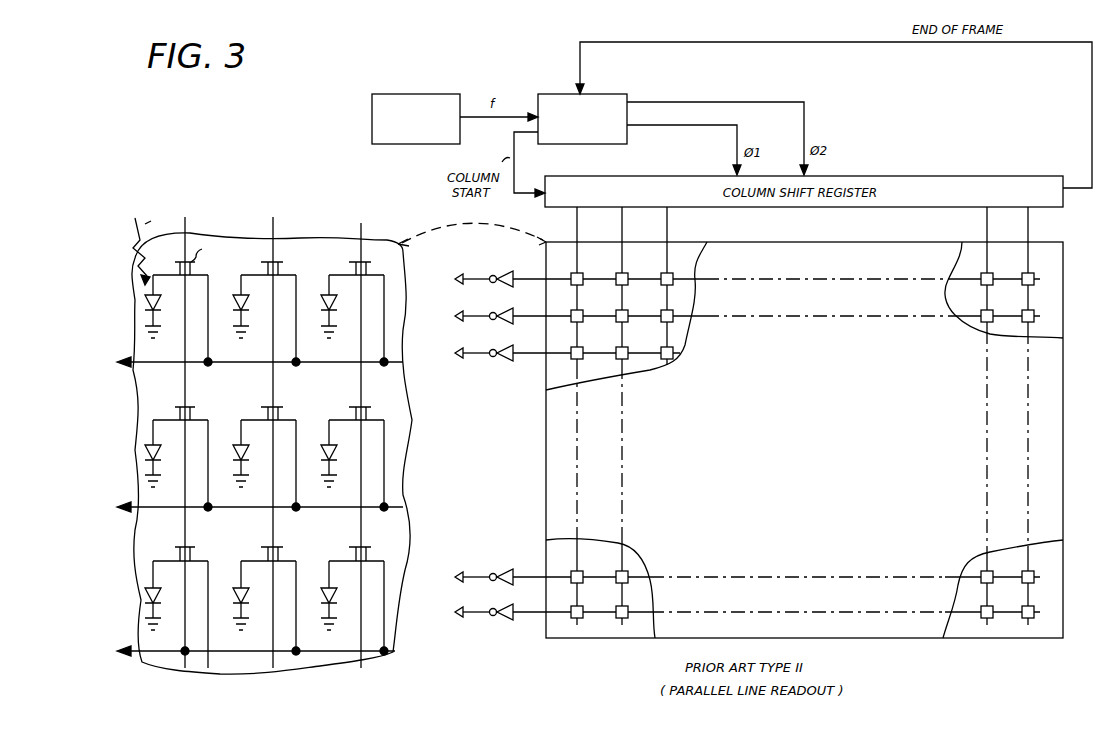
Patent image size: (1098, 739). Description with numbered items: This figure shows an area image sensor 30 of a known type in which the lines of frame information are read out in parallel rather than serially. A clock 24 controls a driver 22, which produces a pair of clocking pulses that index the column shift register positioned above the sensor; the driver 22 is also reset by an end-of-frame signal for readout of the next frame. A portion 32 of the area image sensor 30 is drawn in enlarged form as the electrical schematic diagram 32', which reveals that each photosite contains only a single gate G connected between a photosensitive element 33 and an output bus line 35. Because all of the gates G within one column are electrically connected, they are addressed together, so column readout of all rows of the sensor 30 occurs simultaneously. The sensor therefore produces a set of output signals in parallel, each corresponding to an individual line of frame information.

The driver 22 is at (609, 94).
The clock 24 is at (435, 94).
The area image sensor 30 is at (796, 450).
The portion of the area image sensor 32 is at (802, 445).
The electrical schematic diagram 32' is at (264, 452).
The photosensitive element 33 is at (158, 303).
The output bus line 35 is at (237, 363).